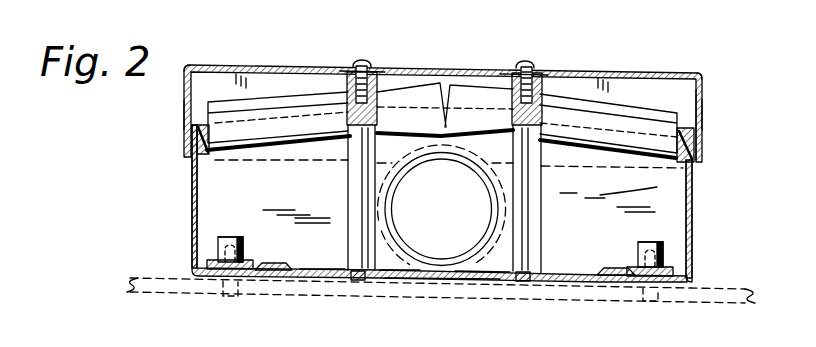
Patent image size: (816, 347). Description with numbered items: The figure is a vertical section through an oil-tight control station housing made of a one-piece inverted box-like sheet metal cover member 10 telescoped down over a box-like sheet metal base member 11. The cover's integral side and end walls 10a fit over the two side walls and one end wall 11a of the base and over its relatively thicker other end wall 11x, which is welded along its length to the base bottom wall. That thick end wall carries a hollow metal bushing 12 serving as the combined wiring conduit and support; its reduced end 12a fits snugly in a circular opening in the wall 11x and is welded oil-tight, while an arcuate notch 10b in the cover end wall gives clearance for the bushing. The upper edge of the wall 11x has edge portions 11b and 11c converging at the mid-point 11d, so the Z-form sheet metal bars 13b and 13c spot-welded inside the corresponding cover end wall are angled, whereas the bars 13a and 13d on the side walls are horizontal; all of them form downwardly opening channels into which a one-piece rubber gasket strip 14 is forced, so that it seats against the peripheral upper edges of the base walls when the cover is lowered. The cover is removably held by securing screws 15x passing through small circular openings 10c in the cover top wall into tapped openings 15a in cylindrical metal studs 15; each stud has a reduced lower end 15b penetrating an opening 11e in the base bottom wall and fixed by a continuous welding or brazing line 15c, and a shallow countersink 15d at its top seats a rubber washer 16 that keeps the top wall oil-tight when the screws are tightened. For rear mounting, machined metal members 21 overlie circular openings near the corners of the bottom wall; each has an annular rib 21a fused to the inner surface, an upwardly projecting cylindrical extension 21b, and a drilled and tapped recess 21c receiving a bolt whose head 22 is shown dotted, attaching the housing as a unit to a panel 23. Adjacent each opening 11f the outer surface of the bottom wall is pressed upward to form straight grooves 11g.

The cover member 10 is at (184, 102).
The side and end walls of cover member 10a is at (186, 118).
The arcuate notch 10b is at (414, 162).
The screw opening in cap 10c is at (378, 80).
The base member 11 is at (192, 199).
The side walls of base member 11a is at (192, 173).
The edge portion of end wall 11b is at (235, 138).
The edge portion of end wall 11c is at (612, 150).
The converging point 11d is at (460, 158).
The openings in bottom wall 11e is at (337, 279).
The opening 11f is at (217, 280).
The straight grooves 11g is at (270, 278).
The end wall of base member 11x is at (657, 187).
The hollow metal bushing 12 is at (483, 253).
The reduced end of bushing 12a is at (443, 279).
The sheet metal bar 13a is at (703, 120).
The sheet metal bar 13b is at (640, 145).
The sheet metal bar 13c is at (265, 130).
The sheet metal bar 13d is at (197, 141).
The gasket strip 14 is at (695, 150).
The metal stud 15 is at (348, 180).
The tapped opening 15a is at (347, 108).
The reduced lower end portion of stud 15b is at (357, 281).
The welding or brazing line 15c is at (370, 278).
The countersink recess 15d is at (495, 88).
The securing screw 15x is at (362, 61).
The rubber washer 16 is at (356, 69).
The machined metal member 21 is at (247, 262).
The annular rib portion 21a is at (192, 270).
The cylindrical extension 21b is at (222, 240).
The tapped recess 21c is at (222, 253).
The bolt head 22 is at (232, 300).
The panel 23 is at (140, 300).